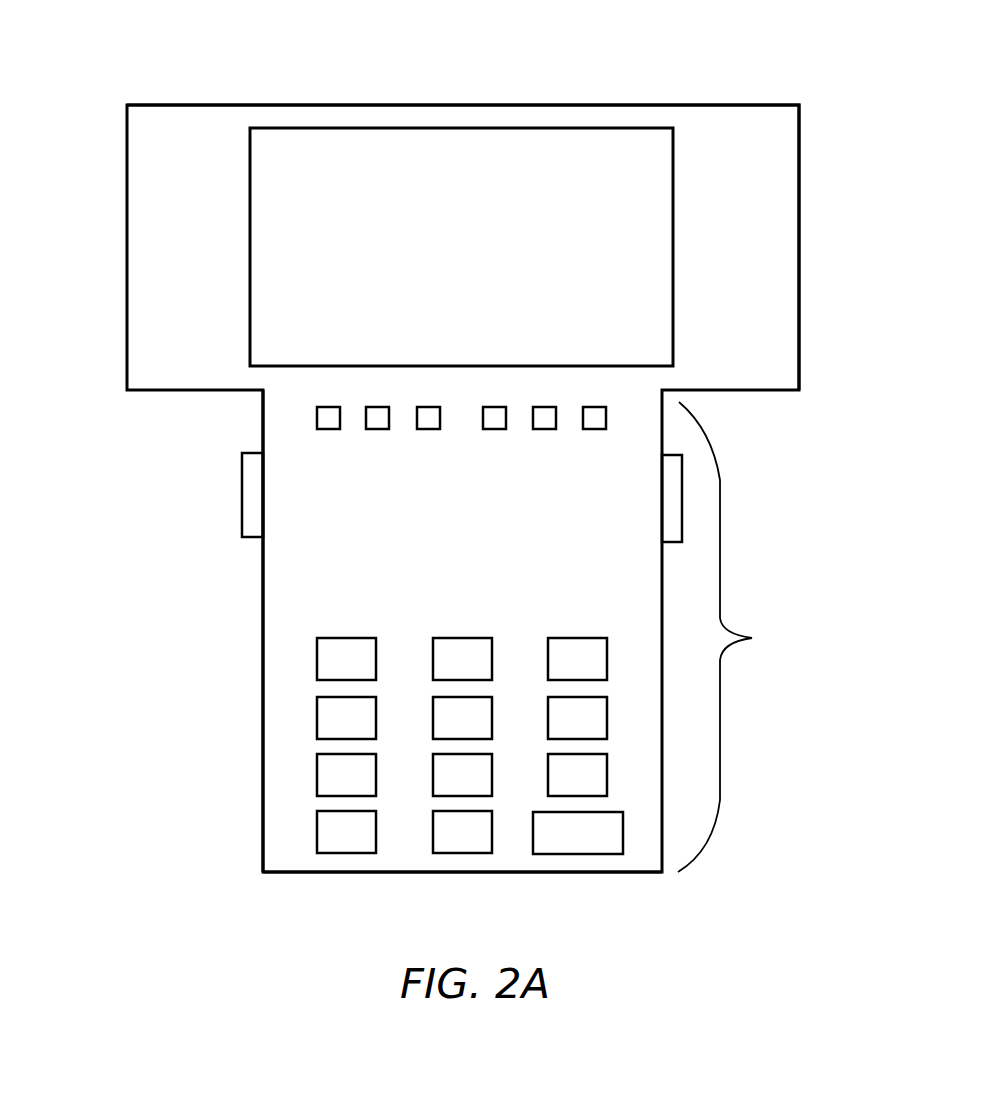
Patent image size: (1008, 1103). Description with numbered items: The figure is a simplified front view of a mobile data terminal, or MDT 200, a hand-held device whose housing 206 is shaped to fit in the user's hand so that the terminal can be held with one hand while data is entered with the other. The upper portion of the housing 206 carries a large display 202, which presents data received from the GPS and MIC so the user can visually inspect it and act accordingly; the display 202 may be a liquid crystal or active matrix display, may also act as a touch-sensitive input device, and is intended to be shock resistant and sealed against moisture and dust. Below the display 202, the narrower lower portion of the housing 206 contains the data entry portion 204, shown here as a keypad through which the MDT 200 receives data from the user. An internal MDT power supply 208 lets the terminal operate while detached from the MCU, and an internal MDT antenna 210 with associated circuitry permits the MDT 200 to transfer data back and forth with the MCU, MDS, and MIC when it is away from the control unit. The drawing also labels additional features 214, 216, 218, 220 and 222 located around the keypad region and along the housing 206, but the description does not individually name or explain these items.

The mobile data terminal (MDT) 200 is at (519, 438).
The display 202 is at (572, 128).
The data entry portion 204 is at (741, 637).
The housing 206 is at (800, 177).
The internal MDT power supply 208 is at (285, 805).
The MDT antenna 210 is at (152, 228).
The lower housing edge 214 is at (287, 453).
The keys 216 is at (378, 429).
The function key 218 is at (593, 429).
The side buttons 220 is at (242, 490).
The enter key 222 is at (590, 855).